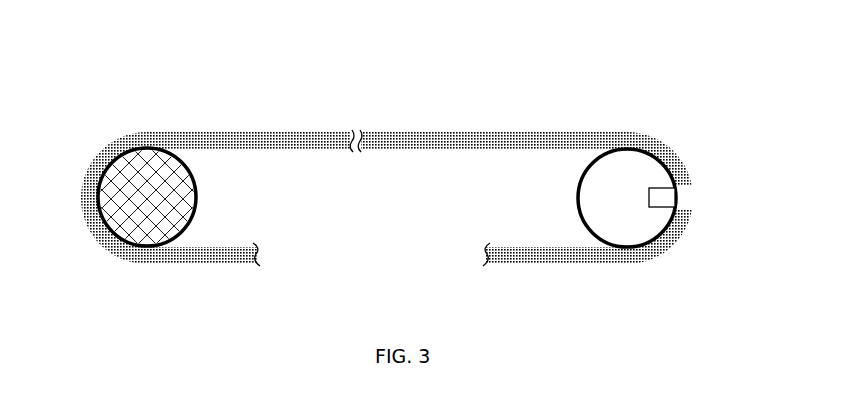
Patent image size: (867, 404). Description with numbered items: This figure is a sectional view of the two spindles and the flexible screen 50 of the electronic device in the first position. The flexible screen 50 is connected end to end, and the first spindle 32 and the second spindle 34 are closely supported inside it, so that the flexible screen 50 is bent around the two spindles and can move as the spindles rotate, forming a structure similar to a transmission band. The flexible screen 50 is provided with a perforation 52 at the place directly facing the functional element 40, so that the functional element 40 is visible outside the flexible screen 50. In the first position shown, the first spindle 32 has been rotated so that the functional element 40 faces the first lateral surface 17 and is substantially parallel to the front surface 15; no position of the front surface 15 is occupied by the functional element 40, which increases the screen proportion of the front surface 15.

The front surface 15 is at (558, 133).
The first lateral surface 17 is at (694, 217).
The first spindle 32 is at (633, 182).
The second spindle 34 is at (132, 178).
The functional element 40 is at (662, 198).
The flexible screen 50 is at (394, 131).
The perforation 52 is at (682, 192).